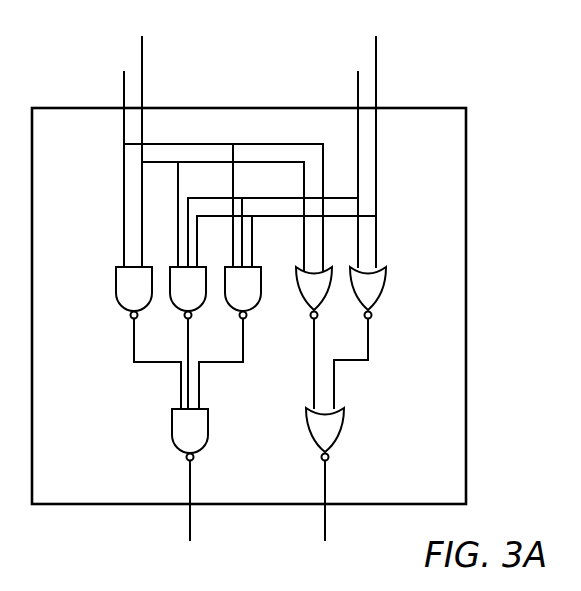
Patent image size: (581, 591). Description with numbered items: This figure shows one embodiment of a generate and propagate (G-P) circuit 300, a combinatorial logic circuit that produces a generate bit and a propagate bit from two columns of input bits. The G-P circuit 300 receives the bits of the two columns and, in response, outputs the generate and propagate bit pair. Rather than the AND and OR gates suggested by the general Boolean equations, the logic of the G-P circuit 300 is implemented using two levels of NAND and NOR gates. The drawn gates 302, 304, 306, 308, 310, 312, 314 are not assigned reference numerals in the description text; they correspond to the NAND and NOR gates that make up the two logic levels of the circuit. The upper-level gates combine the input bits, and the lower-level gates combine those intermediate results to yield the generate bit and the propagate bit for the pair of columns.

The generate and propagate (G-P) circuit 300 is at (249, 294).
The NAND gate (first, inputs A_i+1 and B_i+1; unlabeled in drawing) 302 is at (134, 293).
The NAND gate (second, three-input; unlabeled in drawing) 304 is at (188, 293).
The NAND gate (third, three-input; unlabeled in drawing) 306 is at (243, 293).
The NOR gate (inputs A_i+1 and B_i+1; unlabeled in drawing) 308 is at (314, 293).
The NOR gate (inputs A_i and B_i; unlabeled in drawing) 310 is at (368, 293).
The output NAND gate producing G_j (unlabeled in drawing) 312 is at (190, 435).
The output NOR gate producing P_j (unlabeled in drawing) 314 is at (325, 434).